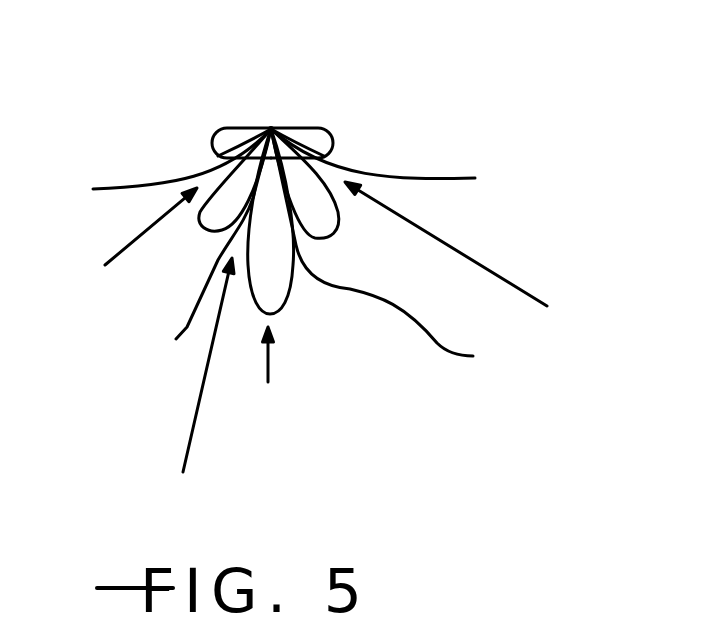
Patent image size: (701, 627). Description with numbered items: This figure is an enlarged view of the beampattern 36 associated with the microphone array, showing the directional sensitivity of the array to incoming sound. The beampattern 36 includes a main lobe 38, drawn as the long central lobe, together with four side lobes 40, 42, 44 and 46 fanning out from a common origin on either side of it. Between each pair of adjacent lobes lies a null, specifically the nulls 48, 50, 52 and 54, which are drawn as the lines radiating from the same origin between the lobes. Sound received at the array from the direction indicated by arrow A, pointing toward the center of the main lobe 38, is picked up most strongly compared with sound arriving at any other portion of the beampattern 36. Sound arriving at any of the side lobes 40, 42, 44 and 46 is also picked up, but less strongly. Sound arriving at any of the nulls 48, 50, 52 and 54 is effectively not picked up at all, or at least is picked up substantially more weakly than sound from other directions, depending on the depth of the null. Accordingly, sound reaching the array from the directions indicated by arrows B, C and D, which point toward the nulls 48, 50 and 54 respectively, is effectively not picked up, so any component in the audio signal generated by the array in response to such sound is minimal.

The beampattern 36 is at (271, 129).
The main lobe 38 is at (289, 301).
The side lobe 40 is at (213, 146).
The side lobe 42 is at (207, 228).
The side lobe 44 is at (331, 236).
The side lobe 46 is at (333, 148).
The null 48 is at (164, 167).
The null 50 is at (208, 244).
The null 52 is at (389, 251).
The null 54 is at (391, 161).
The arrow A is at (268, 361).
The arrow B is at (136, 237).
The arrow C is at (189, 441).
The arrow D is at (508, 280).